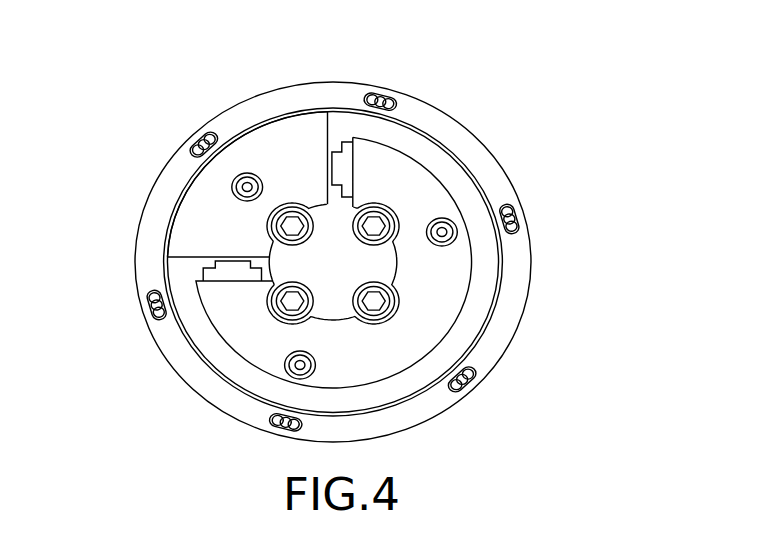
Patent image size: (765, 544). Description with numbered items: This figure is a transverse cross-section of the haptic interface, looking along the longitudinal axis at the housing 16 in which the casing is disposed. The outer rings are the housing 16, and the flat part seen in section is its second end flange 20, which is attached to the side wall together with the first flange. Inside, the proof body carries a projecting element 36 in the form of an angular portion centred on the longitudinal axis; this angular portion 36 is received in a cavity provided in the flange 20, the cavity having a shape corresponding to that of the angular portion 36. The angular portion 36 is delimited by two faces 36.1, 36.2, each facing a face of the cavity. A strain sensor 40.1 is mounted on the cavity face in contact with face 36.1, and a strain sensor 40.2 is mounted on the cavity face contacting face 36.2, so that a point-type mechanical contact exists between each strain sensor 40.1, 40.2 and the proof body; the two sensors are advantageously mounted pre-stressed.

The housing 16 is at (422, 152).
The second end flange 20 is at (173, 187).
The projecting element 36 is at (253, 158).
The face of the angular portion 36.1 is at (182, 258).
The face of the angular portion 36.2 is at (341, 118).
The strain sensor 40.1 is at (232, 260).
The strain sensor 40.2 is at (320, 146).